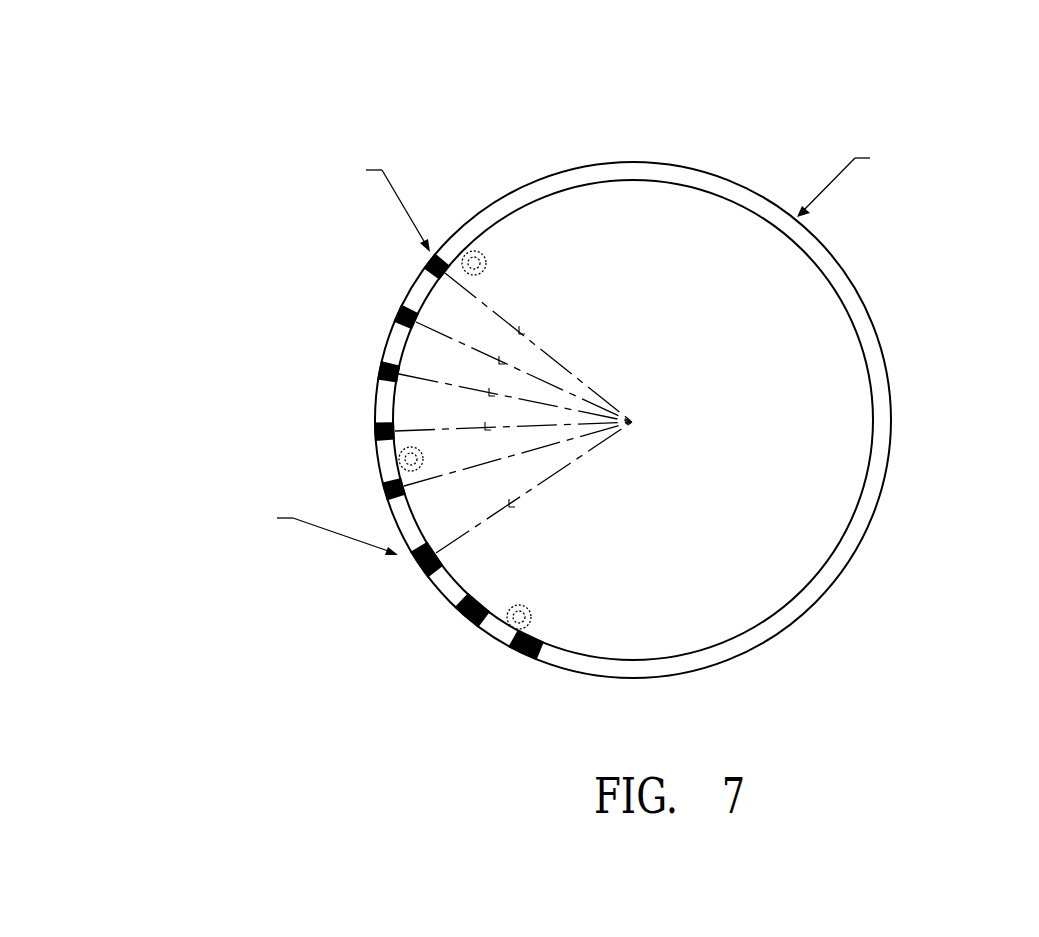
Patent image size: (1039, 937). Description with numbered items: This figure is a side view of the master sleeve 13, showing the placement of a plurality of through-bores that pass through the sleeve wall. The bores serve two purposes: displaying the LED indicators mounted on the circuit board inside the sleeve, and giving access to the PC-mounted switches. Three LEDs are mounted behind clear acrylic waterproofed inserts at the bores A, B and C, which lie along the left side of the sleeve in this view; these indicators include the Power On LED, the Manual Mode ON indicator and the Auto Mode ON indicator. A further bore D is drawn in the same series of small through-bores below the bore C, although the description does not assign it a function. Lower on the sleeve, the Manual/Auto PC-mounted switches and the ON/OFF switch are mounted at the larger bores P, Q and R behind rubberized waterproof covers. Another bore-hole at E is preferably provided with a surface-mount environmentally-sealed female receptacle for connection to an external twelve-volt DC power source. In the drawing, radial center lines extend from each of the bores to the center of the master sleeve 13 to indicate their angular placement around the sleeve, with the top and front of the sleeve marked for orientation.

The master sleeve 13 is at (537, 96).
The through-bore for LED indicator A is at (430, 260).
The through-bore for LED indicator B is at (402, 314).
The through-bore for LED indicator C is at (382, 373).
The 0.1 inch drill-through hole D is at (380, 431).
The bore-hole for power receptacle E is at (456, 440).
The switch mounting location P is at (417, 565).
The switch mounting location Q is at (468, 622).
The switch mounting location R is at (520, 661).